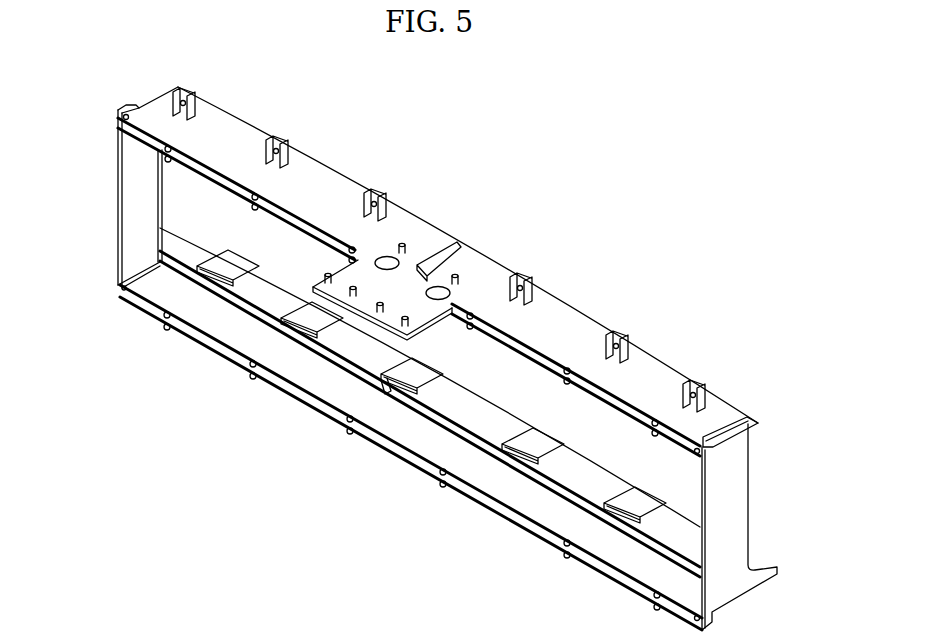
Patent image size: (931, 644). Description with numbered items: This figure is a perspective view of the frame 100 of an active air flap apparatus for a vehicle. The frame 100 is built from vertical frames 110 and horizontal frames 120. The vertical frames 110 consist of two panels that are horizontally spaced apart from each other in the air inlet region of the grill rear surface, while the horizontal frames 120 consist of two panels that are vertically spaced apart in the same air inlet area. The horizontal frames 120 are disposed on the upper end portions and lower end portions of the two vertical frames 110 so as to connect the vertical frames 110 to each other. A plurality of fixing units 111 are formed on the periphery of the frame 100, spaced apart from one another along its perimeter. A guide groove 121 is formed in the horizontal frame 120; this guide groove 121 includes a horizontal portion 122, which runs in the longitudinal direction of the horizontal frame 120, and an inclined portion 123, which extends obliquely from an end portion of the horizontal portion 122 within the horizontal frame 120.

The frame 100 is at (592, 112).
The vertical frame 110 is at (148, 209).
The fixing unit 111 is at (700, 390).
The horizontal frame 120 is at (293, 222).
The guide groove 121 is at (378, 497).
The horizontal portion 122 is at (353, 428).
The inclined portion 123 is at (412, 400).